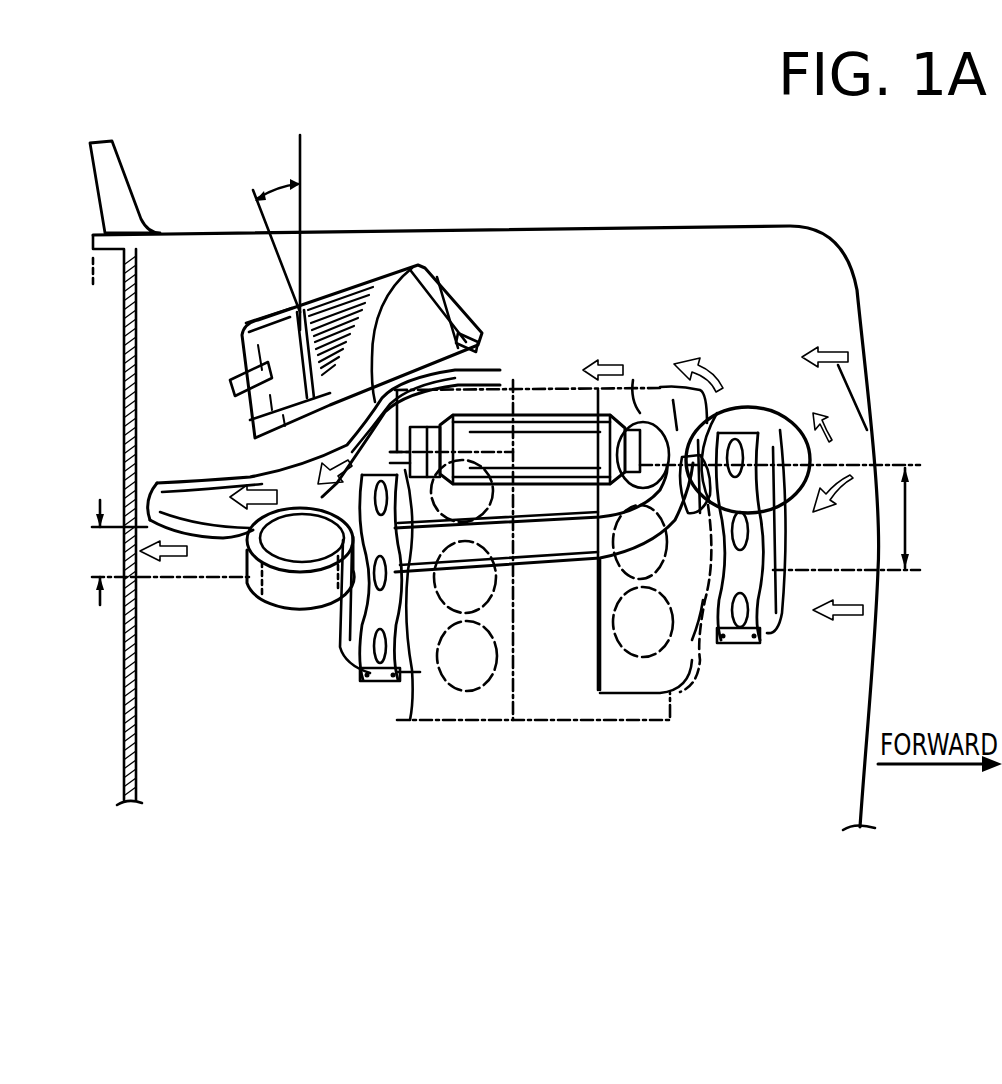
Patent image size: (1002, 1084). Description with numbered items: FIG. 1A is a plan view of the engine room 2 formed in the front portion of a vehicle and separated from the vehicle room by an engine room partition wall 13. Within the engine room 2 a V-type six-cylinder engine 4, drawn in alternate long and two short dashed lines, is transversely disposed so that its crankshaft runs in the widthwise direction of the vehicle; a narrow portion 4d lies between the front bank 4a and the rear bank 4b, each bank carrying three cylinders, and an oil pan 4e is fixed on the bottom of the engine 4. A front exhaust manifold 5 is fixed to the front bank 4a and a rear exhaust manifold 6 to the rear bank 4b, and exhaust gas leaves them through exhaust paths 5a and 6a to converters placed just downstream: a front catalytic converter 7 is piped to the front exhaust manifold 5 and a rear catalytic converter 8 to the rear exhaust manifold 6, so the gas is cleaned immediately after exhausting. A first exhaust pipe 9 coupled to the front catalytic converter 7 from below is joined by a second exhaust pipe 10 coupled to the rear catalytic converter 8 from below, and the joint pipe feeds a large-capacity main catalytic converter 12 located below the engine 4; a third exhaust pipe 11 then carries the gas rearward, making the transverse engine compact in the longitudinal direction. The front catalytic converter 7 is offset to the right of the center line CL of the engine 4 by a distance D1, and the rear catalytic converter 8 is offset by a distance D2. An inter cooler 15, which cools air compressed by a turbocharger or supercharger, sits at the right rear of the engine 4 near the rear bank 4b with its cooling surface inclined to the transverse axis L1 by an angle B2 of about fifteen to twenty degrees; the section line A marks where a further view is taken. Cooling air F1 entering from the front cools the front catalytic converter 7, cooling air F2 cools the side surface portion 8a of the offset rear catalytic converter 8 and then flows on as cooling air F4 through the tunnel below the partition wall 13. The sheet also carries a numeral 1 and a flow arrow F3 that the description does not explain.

The engine compartment / vehicle front body 1 is at (378, 222).
The engine room 2 is at (505, 270).
The V6 engine 4 is at (502, 386).
The front bank 4a is at (688, 675).
The rear bank 4b is at (487, 712).
The narrow portion 4d is at (608, 708).
The oil pan 4e is at (632, 400).
The front exhaust manifold 5 is at (777, 630).
The exhaust path 5a is at (685, 524).
The rear exhaust manifold 6 is at (345, 645).
The exhaust path 6a is at (413, 665).
The front catalytic converter 7 is at (783, 412).
The rear catalytic converter 8 is at (303, 593).
The side surface portion 8a is at (277, 478).
The first exhaust pipe 9 is at (660, 388).
The second exhaust pipe 10 is at (558, 545).
The third exhaust pipe 11 is at (166, 490).
The main catalytic converter 12 is at (548, 412).
The engine room partition wall 13 is at (137, 318).
The inter cooler 15 is at (332, 290).
The line A— A is at (72, 207).
The angle B2 is at (262, 193).
The axis L1 is at (302, 145).
The distance D1 is at (791, 517).
The distance D2 is at (154, 552).
The center line CL is at (888, 572).
The cooling air F1 is at (867, 427).
The cooling air F2 is at (712, 360).
The air flow F3 is at (413, 263).
The cooling air F4 is at (165, 562).